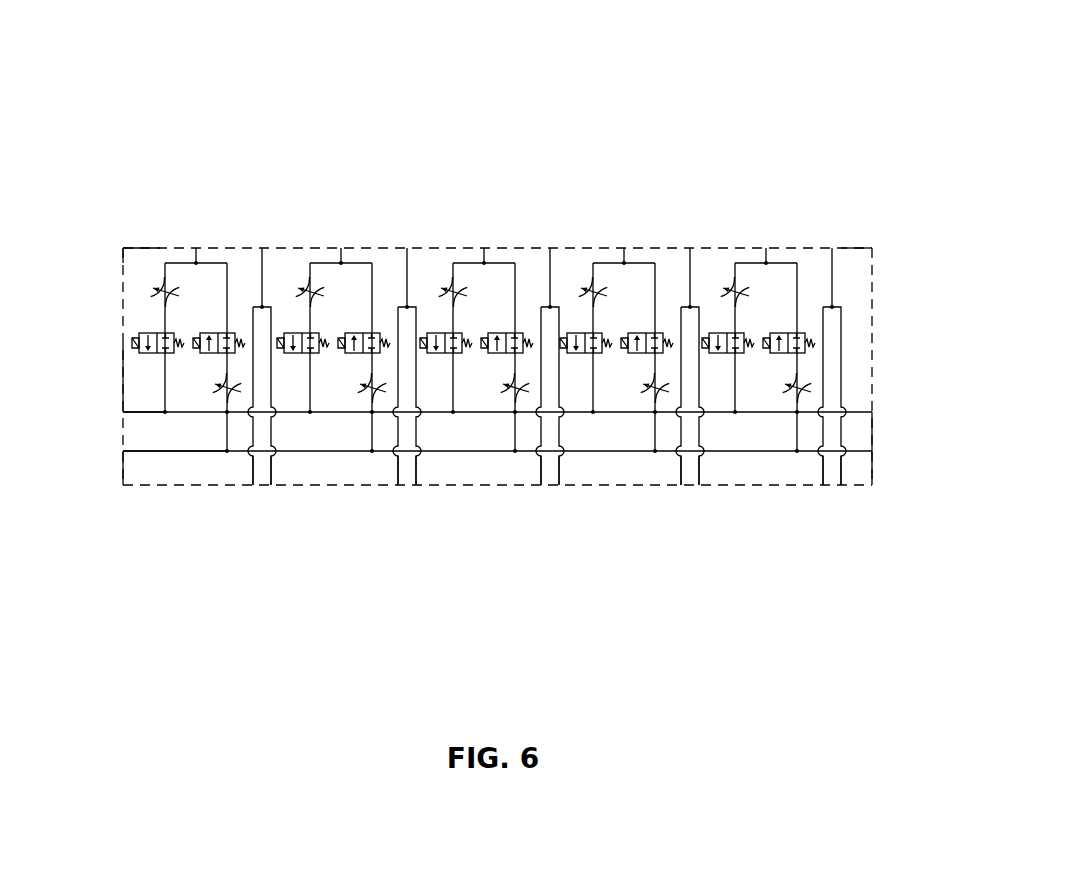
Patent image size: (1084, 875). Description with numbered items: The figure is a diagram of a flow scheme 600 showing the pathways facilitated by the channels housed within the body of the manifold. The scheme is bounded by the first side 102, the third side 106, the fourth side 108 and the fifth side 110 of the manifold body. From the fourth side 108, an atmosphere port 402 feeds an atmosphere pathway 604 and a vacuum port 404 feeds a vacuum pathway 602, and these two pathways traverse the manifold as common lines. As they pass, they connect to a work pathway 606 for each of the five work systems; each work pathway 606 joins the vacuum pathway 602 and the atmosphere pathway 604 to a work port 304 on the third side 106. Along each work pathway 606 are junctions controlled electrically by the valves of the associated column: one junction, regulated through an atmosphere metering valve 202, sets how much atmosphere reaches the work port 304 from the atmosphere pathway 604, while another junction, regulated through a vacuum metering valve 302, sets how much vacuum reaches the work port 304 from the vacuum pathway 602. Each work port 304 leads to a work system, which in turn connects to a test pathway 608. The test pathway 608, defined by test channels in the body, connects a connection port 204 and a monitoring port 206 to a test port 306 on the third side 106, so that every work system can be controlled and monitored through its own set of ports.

The flow scheme 600 is at (455, 62).
The first side 102 is at (859, 236).
The third side 106 is at (318, 489).
The fourth side 108 is at (121, 342).
The fifth side 110 is at (876, 340).
The atmosphere port 402 is at (120, 446).
The vacuum port 404 is at (120, 407).
The vacuum pathway 602 is at (145, 419).
The atmosphere pathway 604 is at (178, 458).
The work port 304 is at (196, 240).
The test port 306 is at (261, 243).
The work pathway 606 is at (172, 266).
The test pathway 608 is at (252, 304).
The atmosphere metering valve 202 is at (161, 281).
The vacuum metering valve 302 is at (226, 409).
The connection port 204 is at (250, 489).
The monitoring port 206 is at (267, 489).